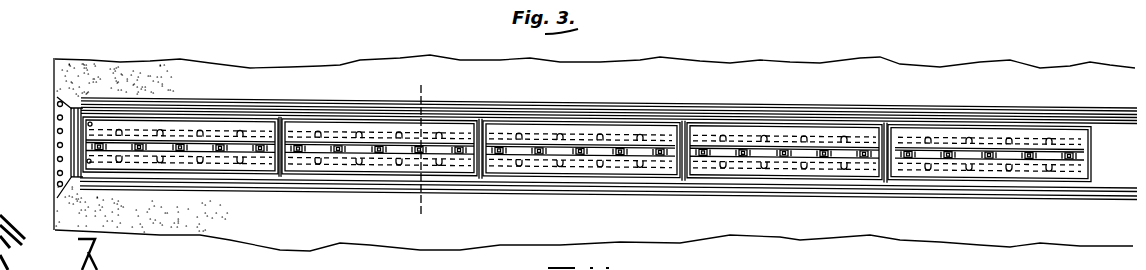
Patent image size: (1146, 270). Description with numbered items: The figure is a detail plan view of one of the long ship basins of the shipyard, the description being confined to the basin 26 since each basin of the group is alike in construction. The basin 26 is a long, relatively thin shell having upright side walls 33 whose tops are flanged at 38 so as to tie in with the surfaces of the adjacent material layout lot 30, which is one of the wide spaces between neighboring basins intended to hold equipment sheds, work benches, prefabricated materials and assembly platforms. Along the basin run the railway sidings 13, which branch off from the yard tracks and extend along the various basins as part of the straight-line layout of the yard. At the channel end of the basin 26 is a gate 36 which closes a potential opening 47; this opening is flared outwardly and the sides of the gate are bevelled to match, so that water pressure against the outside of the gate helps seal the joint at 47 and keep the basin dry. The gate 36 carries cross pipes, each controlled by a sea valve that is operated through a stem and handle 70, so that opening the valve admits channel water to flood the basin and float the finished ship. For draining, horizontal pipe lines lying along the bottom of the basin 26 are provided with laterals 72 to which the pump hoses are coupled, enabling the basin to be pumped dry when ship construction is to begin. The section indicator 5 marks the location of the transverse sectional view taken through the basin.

The section line 5- 5 is at (427, 84).
The railway sidings 13 is at (210, 97).
The basin 26 is at (245, 108).
The material layout lot 30 is at (148, 78).
The side walls 33 is at (28, 144).
The gate 36 is at (56, 129).
The flange 38 is at (268, 116).
The opening 47 is at (66, 94).
The handle 70 is at (57, 151).
The laterals 72 is at (105, 106).